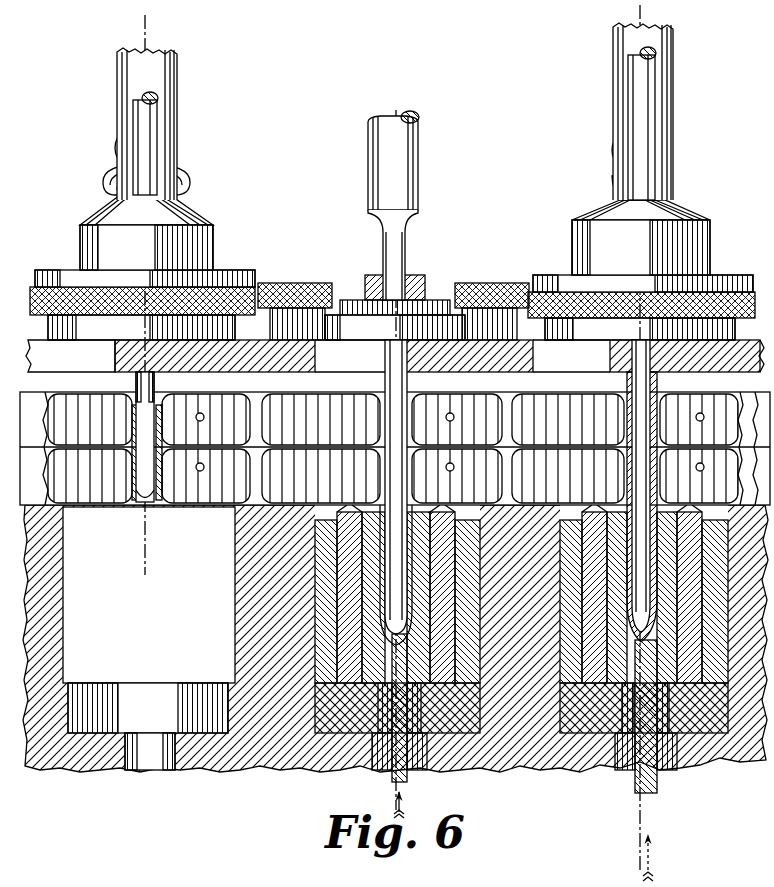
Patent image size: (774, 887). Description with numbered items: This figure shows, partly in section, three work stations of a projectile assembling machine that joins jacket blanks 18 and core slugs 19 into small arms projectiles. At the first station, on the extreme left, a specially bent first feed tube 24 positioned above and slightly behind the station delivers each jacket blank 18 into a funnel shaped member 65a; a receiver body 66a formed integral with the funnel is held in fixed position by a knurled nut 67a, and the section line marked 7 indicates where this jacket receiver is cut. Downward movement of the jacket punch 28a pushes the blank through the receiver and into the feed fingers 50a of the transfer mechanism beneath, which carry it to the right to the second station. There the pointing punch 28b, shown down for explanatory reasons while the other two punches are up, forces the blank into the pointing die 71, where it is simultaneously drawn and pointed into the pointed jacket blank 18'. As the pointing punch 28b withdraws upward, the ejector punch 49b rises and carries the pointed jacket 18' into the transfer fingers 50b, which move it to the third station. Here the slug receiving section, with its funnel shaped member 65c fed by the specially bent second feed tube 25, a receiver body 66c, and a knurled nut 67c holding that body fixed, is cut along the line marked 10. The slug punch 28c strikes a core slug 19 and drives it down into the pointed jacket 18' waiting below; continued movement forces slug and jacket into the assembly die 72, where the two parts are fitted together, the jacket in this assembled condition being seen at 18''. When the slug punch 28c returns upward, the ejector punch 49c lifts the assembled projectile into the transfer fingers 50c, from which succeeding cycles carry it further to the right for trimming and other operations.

The section line 7- 7 is at (122, 22).
The section line 10- 10 is at (608, 12).
The first feed tube 24 is at (162, 76).
The second feed tube 25 is at (660, 66).
The jacket punch 28a is at (140, 118).
The pointing punch 28b is at (380, 135).
The slug punch 28c is at (635, 115).
The funnel shaped member 65a is at (180, 179).
The funnel shaped member 65c is at (668, 190).
The receiver body 66a is at (103, 213).
The receiver body 66c is at (598, 213).
The knurled nut 67a is at (221, 278).
The knurled nut 67c is at (718, 276).
The feed fingers 50a is at (165, 470).
The transfer fingers 50b is at (415, 472).
The transfer fingers 50c is at (662, 470).
The jacket blank 18 is at (133, 453).
The pointed jacket blank 18' is at (379, 497).
The valve pin 18'' is at (626, 497).
The core slug 19 is at (652, 618).
The pointing die 71 is at (408, 630).
The assembly die 72 is at (673, 666).
The ejector punch 49b is at (407, 780).
The ejector punch 49c is at (657, 786).